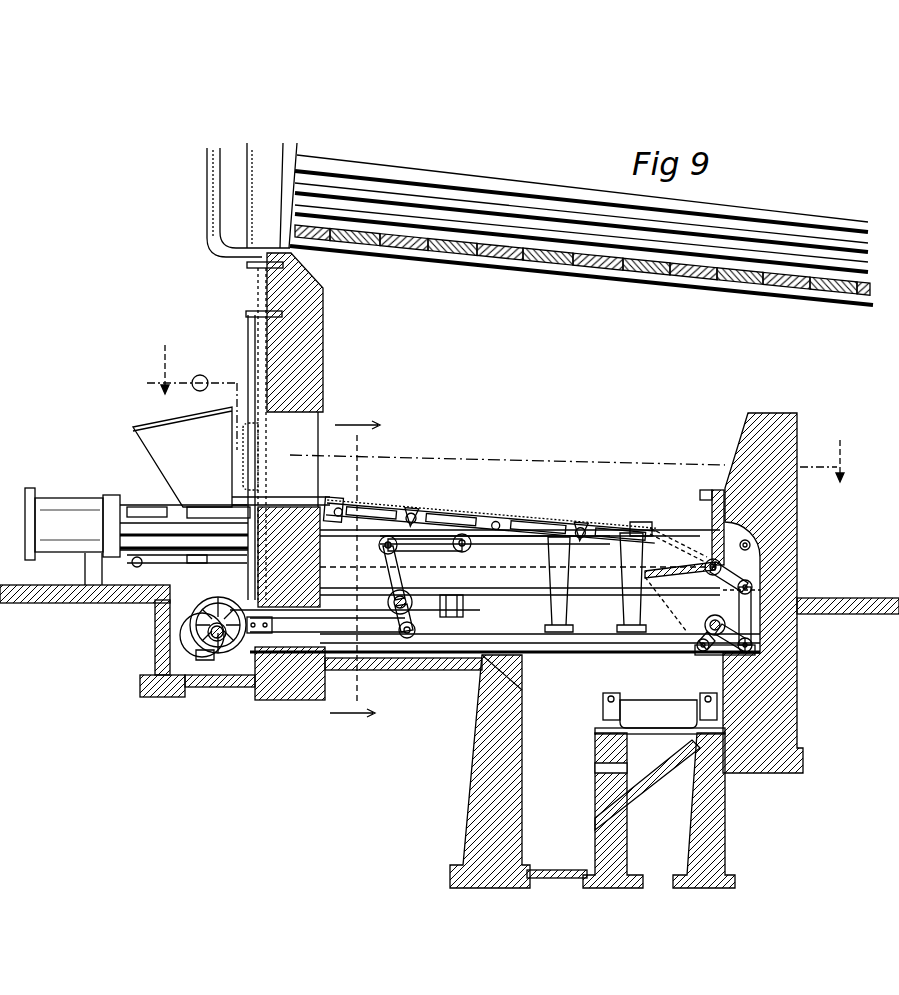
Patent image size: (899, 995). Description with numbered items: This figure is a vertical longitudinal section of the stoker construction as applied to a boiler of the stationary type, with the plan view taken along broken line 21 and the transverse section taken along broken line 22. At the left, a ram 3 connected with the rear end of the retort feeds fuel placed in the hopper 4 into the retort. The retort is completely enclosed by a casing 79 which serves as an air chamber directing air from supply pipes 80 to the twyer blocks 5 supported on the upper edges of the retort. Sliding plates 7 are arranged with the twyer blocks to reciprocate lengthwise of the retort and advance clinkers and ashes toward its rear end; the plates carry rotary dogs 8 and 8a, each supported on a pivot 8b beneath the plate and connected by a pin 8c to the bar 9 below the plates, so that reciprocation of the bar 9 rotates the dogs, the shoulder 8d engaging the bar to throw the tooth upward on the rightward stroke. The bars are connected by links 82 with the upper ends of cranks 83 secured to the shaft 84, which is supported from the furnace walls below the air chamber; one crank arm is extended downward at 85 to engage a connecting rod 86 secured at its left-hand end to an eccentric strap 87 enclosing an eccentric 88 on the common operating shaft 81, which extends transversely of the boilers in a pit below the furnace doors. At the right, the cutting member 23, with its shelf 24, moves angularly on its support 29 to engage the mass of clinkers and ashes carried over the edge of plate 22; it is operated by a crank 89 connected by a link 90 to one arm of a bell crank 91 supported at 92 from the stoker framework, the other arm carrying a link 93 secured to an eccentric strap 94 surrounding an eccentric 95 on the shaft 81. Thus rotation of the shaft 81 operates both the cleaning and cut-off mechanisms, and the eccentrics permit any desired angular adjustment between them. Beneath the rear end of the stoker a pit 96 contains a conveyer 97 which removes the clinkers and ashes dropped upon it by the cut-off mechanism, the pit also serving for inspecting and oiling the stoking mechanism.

The ram 3 is at (64, 502).
The hopper 4 is at (176, 424).
The twyer blocks 5 is at (537, 510).
The sliding plates 7 is at (455, 504).
The rotary dogs 8 is at (585, 526).
The rotary dogs 8a is at (535, 540).
The pivot 8b is at (590, 527).
The pin 8c is at (405, 512).
The shoulder 8d is at (588, 533).
The bars 9 is at (504, 538).
The bearings 21 is at (505, 413).
The plate 22 is at (648, 512).
The cutting member 23 is at (714, 493).
The shelf 24 is at (673, 570).
The support 29 is at (721, 566).
The casings 79 is at (520, 588).
The supply pipes 80 is at (460, 611).
The operating shaft 81 is at (216, 641).
The links 82 is at (428, 550).
The cranks 83 is at (390, 575).
The shaft 84 is at (412, 610).
The downward extension of crank arm 85 is at (395, 614).
The connecting rod 86 is at (380, 632).
The eccentric strap 87 is at (254, 648).
The eccentric 88 is at (196, 627).
The crank 89 is at (730, 574).
The link 90 is at (752, 612).
The bell crank 91 is at (717, 617).
The bell crank support 92 is at (713, 655).
The link 93 is at (573, 643).
The eccentric strap 94 is at (197, 645).
The eccentric 95 is at (197, 658).
The pit 96 is at (509, 771).
The conveyer 97 is at (660, 713).